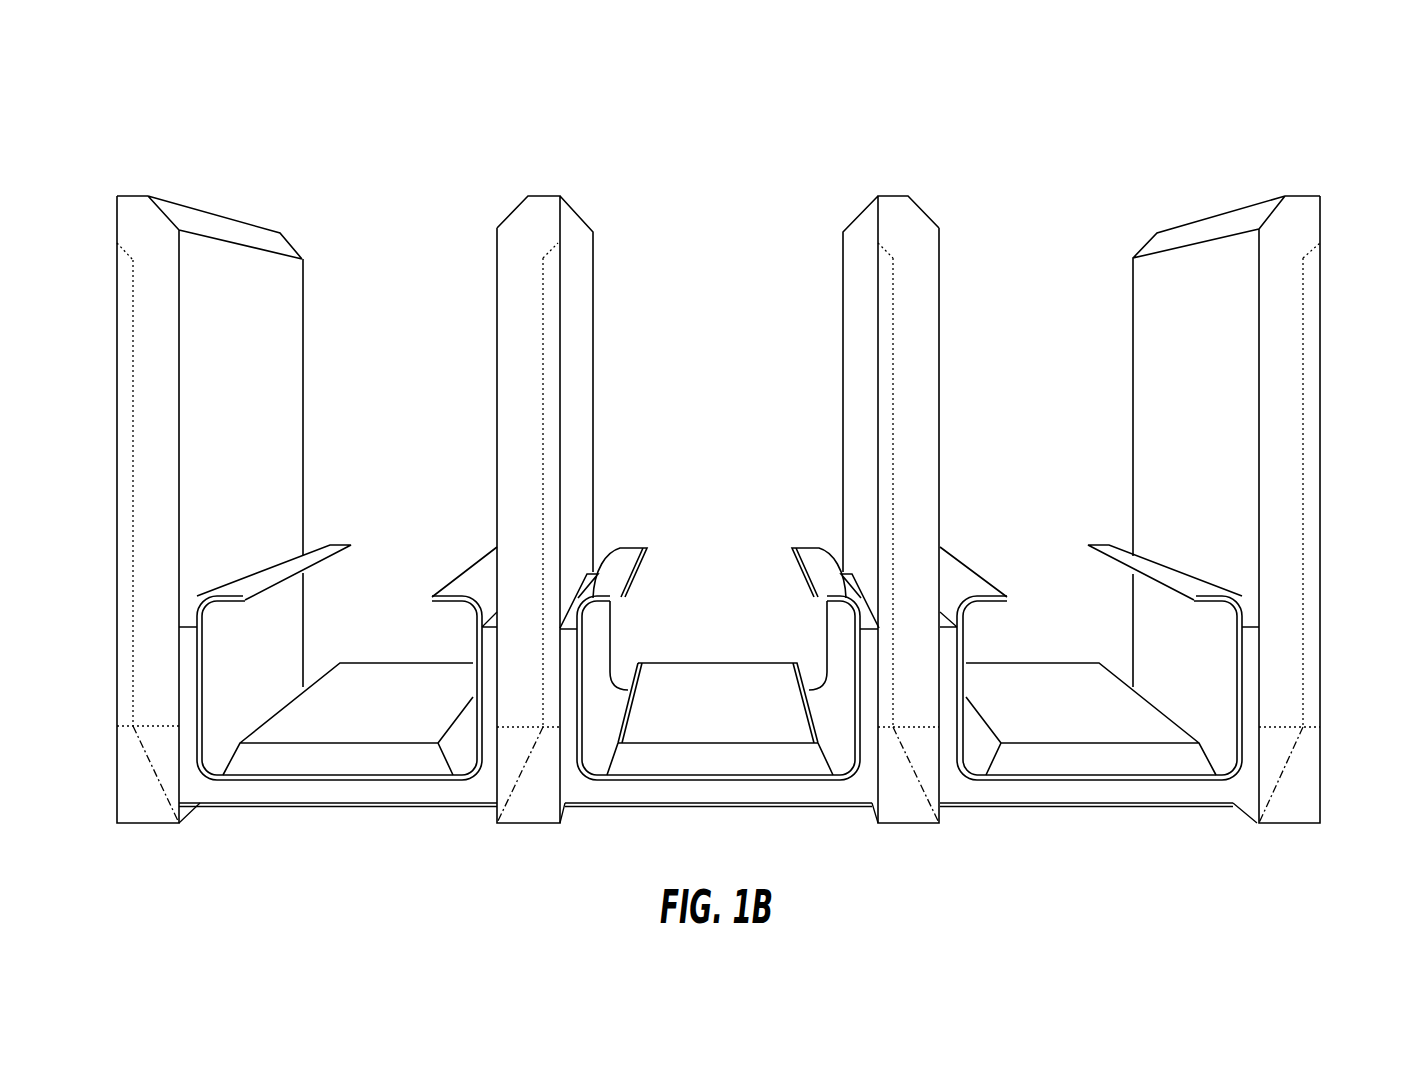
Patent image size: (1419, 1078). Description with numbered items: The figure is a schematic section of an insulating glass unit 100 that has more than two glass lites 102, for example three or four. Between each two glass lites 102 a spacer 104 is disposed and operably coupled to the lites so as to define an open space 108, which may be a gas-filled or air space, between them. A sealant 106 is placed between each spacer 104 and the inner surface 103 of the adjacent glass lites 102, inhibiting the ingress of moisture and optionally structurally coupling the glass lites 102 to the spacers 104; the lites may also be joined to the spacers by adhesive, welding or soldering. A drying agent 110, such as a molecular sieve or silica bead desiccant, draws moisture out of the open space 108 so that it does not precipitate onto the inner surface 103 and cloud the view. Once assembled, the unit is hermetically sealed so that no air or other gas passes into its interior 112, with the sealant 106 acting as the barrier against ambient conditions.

The insulating glass unit 100 is at (160, 148).
The glass lites 102 is at (141, 333).
The inner surface 103 is at (280, 313).
The spacer 104 is at (236, 686).
The sealant 106 is at (517, 716).
The open space 108 is at (426, 480).
The drying agent 110 is at (404, 676).
The interior 112 is at (440, 206).